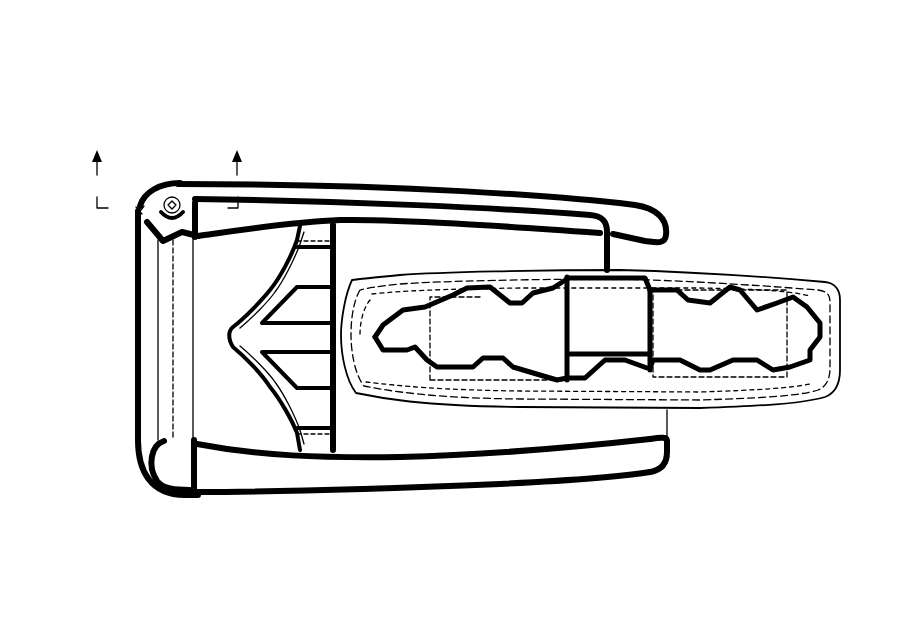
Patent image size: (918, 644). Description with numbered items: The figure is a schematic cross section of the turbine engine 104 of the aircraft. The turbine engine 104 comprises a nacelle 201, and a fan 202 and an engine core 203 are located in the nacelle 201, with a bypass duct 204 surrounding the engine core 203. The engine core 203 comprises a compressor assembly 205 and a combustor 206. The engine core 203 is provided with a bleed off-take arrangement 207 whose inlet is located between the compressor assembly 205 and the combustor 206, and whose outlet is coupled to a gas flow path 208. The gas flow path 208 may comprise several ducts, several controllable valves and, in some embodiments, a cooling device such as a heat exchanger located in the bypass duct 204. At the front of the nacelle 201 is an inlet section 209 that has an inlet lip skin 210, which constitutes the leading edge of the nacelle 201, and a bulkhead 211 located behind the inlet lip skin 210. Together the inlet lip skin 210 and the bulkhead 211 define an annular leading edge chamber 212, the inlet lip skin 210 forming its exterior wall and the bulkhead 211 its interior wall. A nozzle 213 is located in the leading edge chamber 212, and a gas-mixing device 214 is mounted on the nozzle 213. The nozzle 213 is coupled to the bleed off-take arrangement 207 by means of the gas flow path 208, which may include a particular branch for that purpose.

The turbine engine 104 is at (703, 89).
The nacelle 201 is at (263, 182).
The fan 202 is at (340, 252).
The engine core 203 is at (553, 277).
The bypass duct 204 is at (662, 257).
The compressor assembly 205 is at (472, 350).
The combustor 206 is at (697, 350).
The bleed off-take arrangement 207 is at (607, 280).
The gas flow path 208 is at (470, 207).
The inlet section 209 is at (153, 175).
The inlet lip skin 210 is at (147, 234).
The bulkhead 211 is at (192, 200).
The leading edge chamber 212 is at (148, 220).
The nozzle 213 is at (166, 197).
The gas-mixing device 214 is at (172, 196).